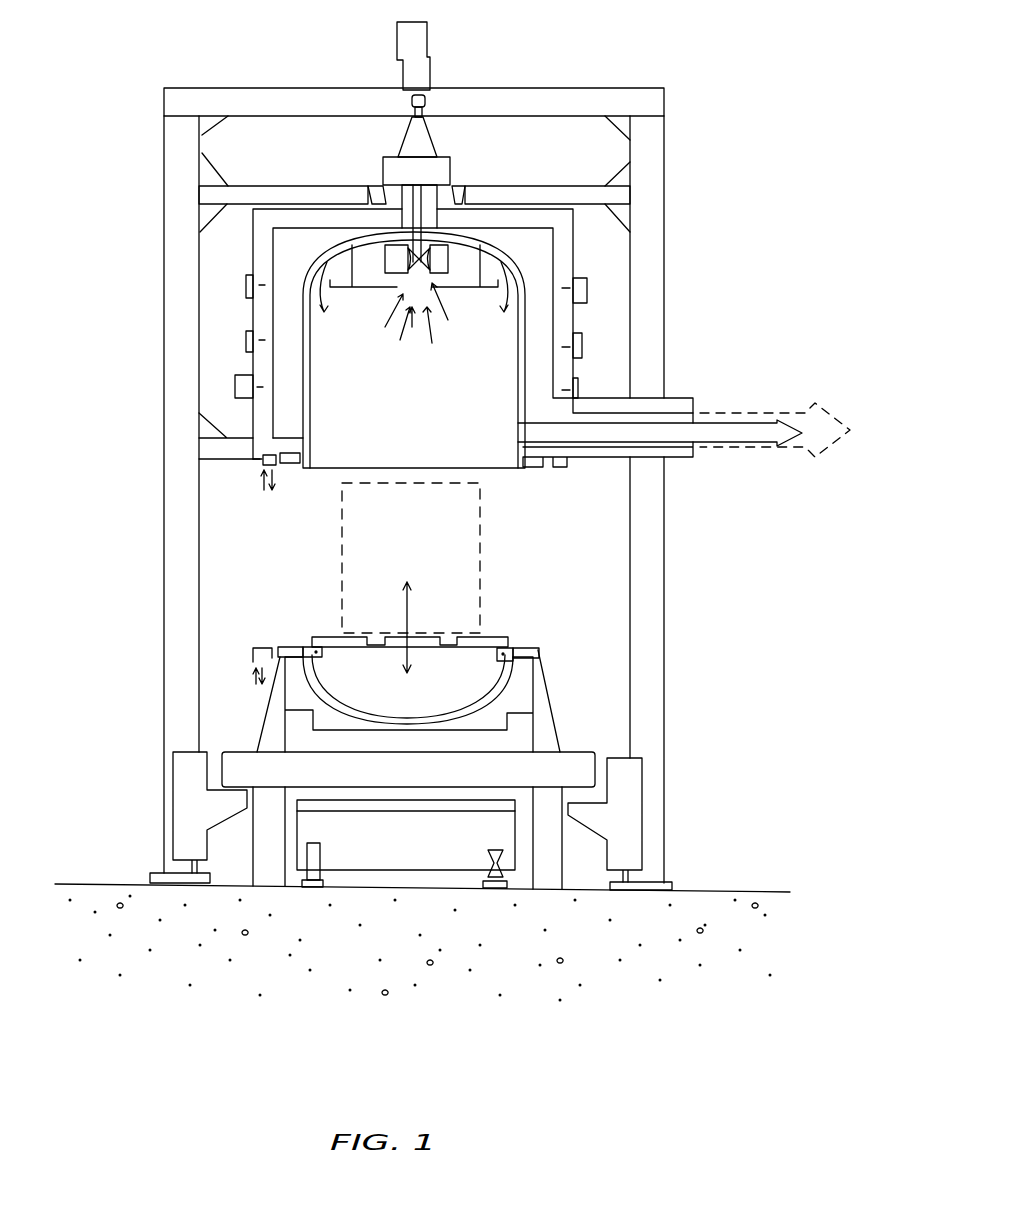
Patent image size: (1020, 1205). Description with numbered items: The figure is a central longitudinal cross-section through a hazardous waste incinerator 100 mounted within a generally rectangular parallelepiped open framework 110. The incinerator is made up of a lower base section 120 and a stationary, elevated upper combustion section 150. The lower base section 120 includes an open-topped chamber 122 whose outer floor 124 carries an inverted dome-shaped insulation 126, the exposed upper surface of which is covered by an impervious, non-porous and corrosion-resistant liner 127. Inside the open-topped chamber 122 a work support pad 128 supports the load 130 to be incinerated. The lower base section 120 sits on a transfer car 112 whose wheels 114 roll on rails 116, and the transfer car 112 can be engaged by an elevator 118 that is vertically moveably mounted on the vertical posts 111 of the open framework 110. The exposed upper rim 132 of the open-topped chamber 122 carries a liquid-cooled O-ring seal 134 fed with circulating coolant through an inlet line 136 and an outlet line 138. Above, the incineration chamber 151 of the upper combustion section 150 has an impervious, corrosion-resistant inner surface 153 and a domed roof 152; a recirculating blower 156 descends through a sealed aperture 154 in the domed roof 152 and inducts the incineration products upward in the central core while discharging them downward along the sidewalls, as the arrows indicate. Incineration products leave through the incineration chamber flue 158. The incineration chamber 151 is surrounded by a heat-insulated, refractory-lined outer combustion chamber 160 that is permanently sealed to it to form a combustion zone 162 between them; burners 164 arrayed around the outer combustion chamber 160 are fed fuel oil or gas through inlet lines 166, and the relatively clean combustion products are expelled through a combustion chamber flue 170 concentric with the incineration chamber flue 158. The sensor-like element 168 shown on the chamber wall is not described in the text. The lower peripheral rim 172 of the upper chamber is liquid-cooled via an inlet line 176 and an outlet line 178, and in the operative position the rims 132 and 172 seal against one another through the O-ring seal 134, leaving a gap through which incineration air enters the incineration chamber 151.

The hazardous waste incinerator 100 is at (300, 500).
The open framework 110 is at (706, 102).
The vertical posts 111 is at (175, 626).
The transfer car 112 is at (437, 862).
The wheels 114 is at (298, 885).
The rails 116 is at (307, 887).
The elevator 118 is at (185, 822).
The lower base section 120 is at (547, 692).
The open-topped chamber 122 is at (315, 640).
The outer floor 124 is at (293, 730).
The inverted dome-shaped insulation 126 is at (350, 720).
The liner 127 is at (488, 710).
The work support pad 128 is at (493, 638).
The load 130 is at (465, 548).
The rim 132 is at (512, 647).
The O-ring seal 134 is at (288, 650).
The inlet line 136 is at (272, 662).
The outlet line 138 is at (253, 662).
The upper combustion section 150 is at (577, 318).
The incineration chamber 151 is at (470, 396).
The domed roof 152 is at (470, 252).
The inner surface 153 is at (503, 268).
The sealed aperture 154 is at (450, 192).
The recirculating blower 156 is at (397, 248).
The incineration chamber flue 158 is at (758, 442).
The outer combustion chamber 160 is at (260, 247).
The combustion zone 162 is at (287, 410).
The burners 164 is at (247, 278).
The fuel inlet lines 166 is at (240, 291).
The sensor 168 is at (595, 292).
The combustion chamber flue 170 is at (832, 418).
The lower peripheral rim 172 is at (300, 468).
The inlet line 176 is at (270, 497).
The outlet line 178 is at (262, 492).